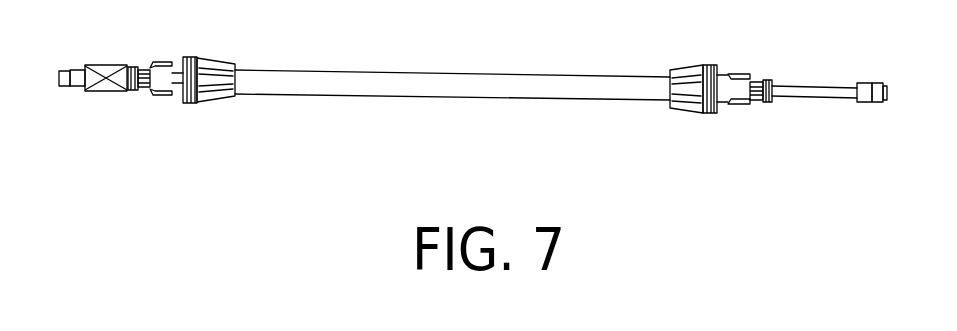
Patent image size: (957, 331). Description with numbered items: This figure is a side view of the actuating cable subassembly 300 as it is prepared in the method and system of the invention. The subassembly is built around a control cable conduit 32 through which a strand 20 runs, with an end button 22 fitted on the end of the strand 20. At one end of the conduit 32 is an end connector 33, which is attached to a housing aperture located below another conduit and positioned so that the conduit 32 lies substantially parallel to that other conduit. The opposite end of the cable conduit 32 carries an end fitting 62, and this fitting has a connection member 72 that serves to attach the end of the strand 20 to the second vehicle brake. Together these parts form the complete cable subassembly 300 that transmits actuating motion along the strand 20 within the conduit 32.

The actuating cable subassembly 300 is at (468, 115).
The connection member 72 is at (113, 63).
The end fitting 62 is at (205, 57).
The control cable conduit 32 is at (458, 73).
The end connector 33 is at (693, 67).
The strand 20 is at (800, 87).
The end button 22 is at (882, 82).